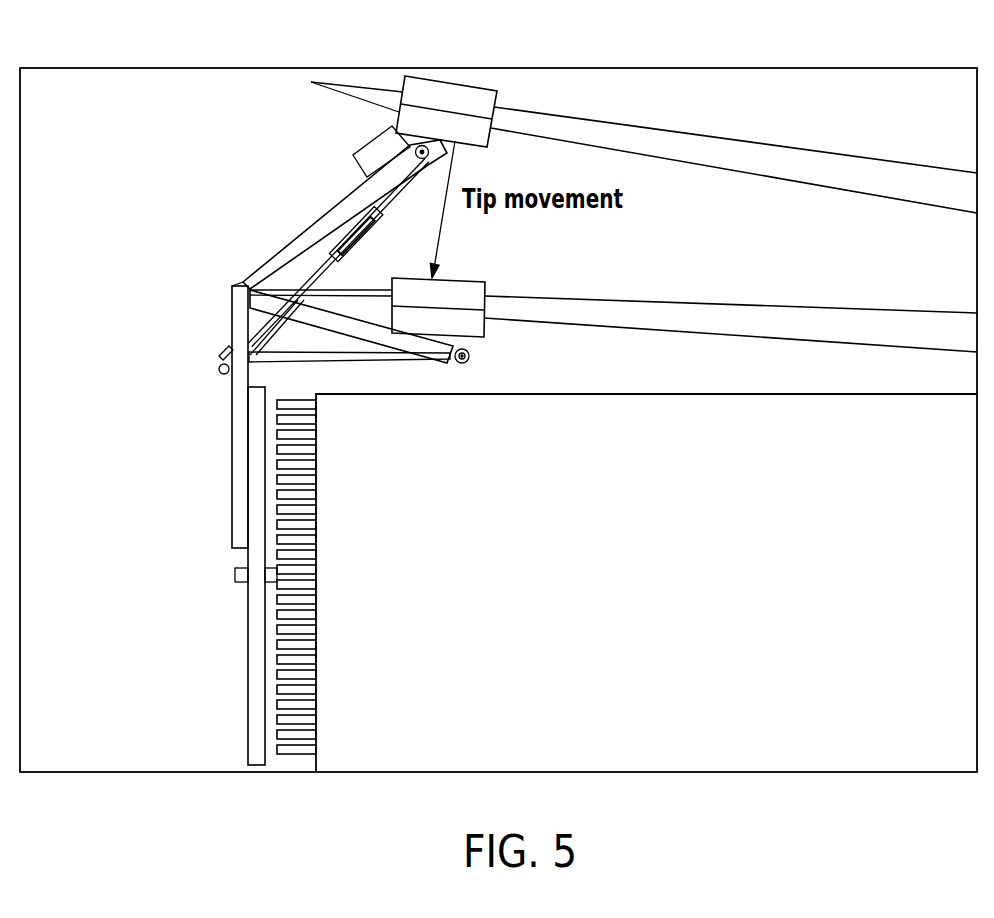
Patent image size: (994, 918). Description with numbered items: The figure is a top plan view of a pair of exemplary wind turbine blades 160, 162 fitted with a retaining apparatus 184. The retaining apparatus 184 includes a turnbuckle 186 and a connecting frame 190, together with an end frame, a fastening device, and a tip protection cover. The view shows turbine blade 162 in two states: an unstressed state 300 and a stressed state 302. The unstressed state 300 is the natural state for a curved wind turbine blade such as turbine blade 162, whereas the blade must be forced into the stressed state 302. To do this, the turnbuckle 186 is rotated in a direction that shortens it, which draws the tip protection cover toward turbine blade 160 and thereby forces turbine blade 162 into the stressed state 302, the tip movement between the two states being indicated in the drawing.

The wind turbine blade 160 is at (617, 550).
The wind turbine blade 162 is at (644, 188).
The retaining apparatus 184 is at (272, 182).
The turnbuckle 186 is at (364, 260).
The connecting frame 190 is at (285, 246).
The unstressed state 300 is at (755, 112).
The stressed state 302 is at (738, 275).